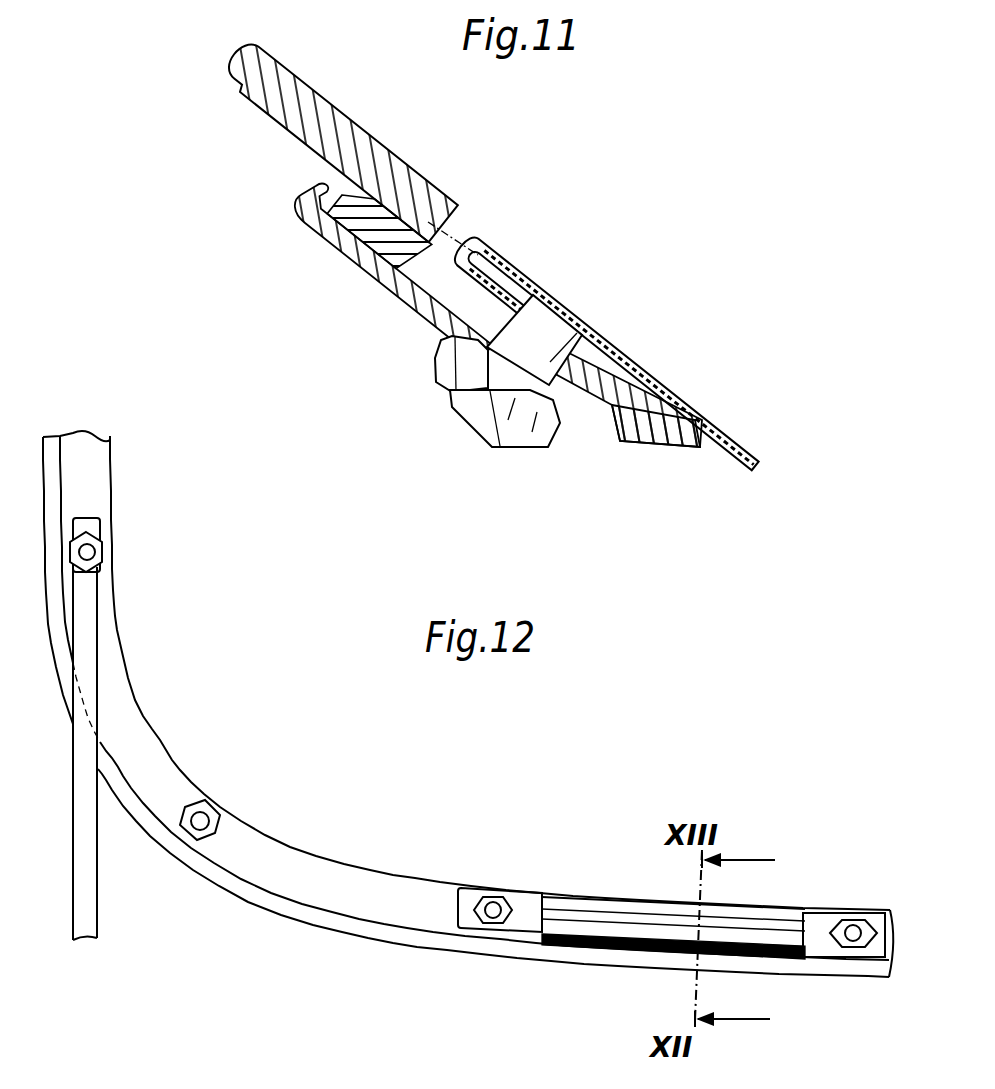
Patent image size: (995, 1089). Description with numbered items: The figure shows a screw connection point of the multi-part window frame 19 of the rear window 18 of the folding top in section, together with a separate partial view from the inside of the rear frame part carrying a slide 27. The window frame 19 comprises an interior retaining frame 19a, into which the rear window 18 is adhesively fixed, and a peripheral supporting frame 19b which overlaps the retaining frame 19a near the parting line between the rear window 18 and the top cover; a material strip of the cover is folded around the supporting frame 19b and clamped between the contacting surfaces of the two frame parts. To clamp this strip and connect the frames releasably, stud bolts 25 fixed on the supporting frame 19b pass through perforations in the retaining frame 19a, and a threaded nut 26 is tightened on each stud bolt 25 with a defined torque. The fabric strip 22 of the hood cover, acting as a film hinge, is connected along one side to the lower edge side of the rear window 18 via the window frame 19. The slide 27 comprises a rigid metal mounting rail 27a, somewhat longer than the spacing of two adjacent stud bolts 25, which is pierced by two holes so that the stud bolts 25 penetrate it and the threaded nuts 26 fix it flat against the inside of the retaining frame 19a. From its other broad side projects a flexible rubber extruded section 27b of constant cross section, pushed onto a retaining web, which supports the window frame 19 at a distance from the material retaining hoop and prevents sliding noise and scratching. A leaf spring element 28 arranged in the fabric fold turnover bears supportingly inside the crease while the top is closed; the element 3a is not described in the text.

In FIG. 11, the rear window 18 is at (303, 127).
In FIG. 11, the window frame 19 is at (420, 317).
In FIG. 11, the retaining frame 19a is at (367, 265).
In FIG. 12, the retaining frame 19a is at (290, 855).
In FIG. 11, the supporting frame 19b is at (690, 433).
In FIG. 12, the supporting frame 19b is at (258, 907).
In FIG. 11, the mounting bracket 3a is at (553, 272).
In FIG. 11, the fabric strip 22 is at (743, 433).
In FIG. 11, the stud bolt 25 is at (463, 427).
In FIG. 12, the stud bolt 25 is at (95, 547).
In FIG. 11, the threaded nut 26 is at (545, 437).
In FIG. 12, the threaded nut 26 is at (97, 556).
In FIG. 12, the slide 27 is at (633, 957).
In FIG. 12, the mounting rail 27a is at (523, 890).
In FIG. 12, the extruded section 27b is at (590, 905).
In FIG. 12, the leaf spring element 28 is at (85, 902).